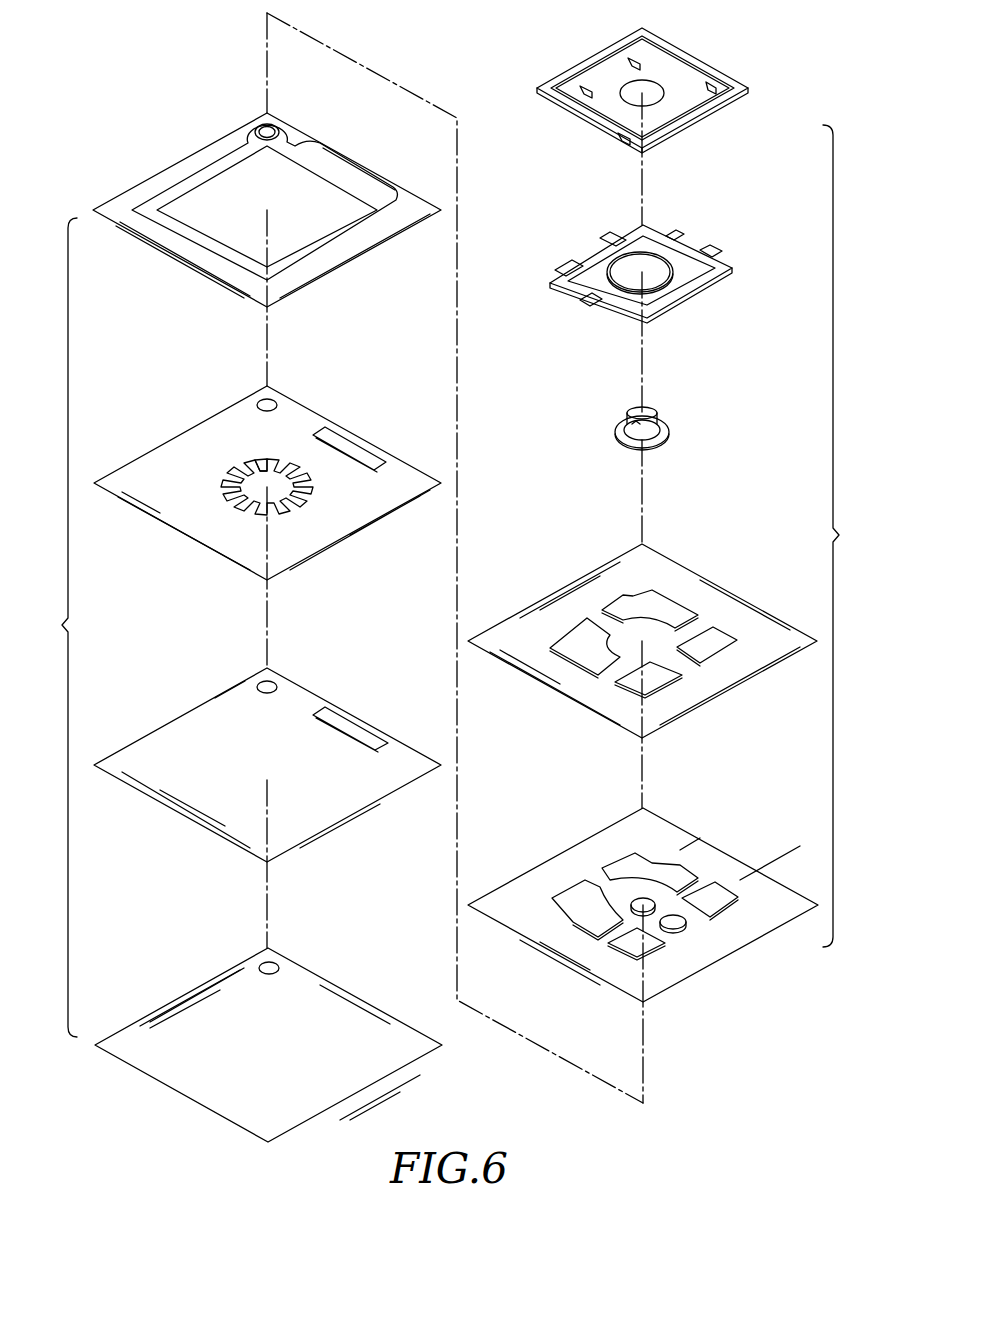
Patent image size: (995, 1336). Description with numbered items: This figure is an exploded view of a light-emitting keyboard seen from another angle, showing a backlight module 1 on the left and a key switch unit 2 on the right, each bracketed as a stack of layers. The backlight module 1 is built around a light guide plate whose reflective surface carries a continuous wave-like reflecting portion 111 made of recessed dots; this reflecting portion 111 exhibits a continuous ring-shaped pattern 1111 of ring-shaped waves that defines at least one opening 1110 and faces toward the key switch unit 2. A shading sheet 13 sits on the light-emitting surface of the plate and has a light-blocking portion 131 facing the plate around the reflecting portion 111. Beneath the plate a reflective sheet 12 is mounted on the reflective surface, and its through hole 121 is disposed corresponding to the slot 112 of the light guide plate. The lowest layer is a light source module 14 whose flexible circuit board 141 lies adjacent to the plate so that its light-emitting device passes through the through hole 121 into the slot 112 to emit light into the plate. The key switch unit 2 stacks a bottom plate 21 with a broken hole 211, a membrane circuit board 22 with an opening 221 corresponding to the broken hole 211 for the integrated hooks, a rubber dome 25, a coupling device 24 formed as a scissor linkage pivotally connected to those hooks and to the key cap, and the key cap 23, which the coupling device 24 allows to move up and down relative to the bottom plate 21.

The backlight module 1 is at (60, 627).
The key switch unit 2 is at (842, 536).
The reflective sheet 12 is at (267, 757).
The shading sheet 13 is at (264, 206).
The light source module 14 is at (267, 1027).
The bottom plate 21 is at (643, 899).
The membrane circuit board 22 is at (642, 635).
The key cap 23 is at (600, 80).
The coupling device 24 is at (592, 240).
The rubber dome 25 is at (622, 432).
The reflecting portion 111 is at (267, 480).
The slot 112 is at (353, 450).
The through hole 121 is at (343, 722).
The light-blocking portion 131 is at (227, 165).
The flexible circuit board 141 is at (215, 972).
The broken hole 211 is at (680, 868).
The opening 221 is at (677, 608).
The opening 1110 is at (238, 480).
The continuous ring-shaped pattern 1111 is at (262, 460).